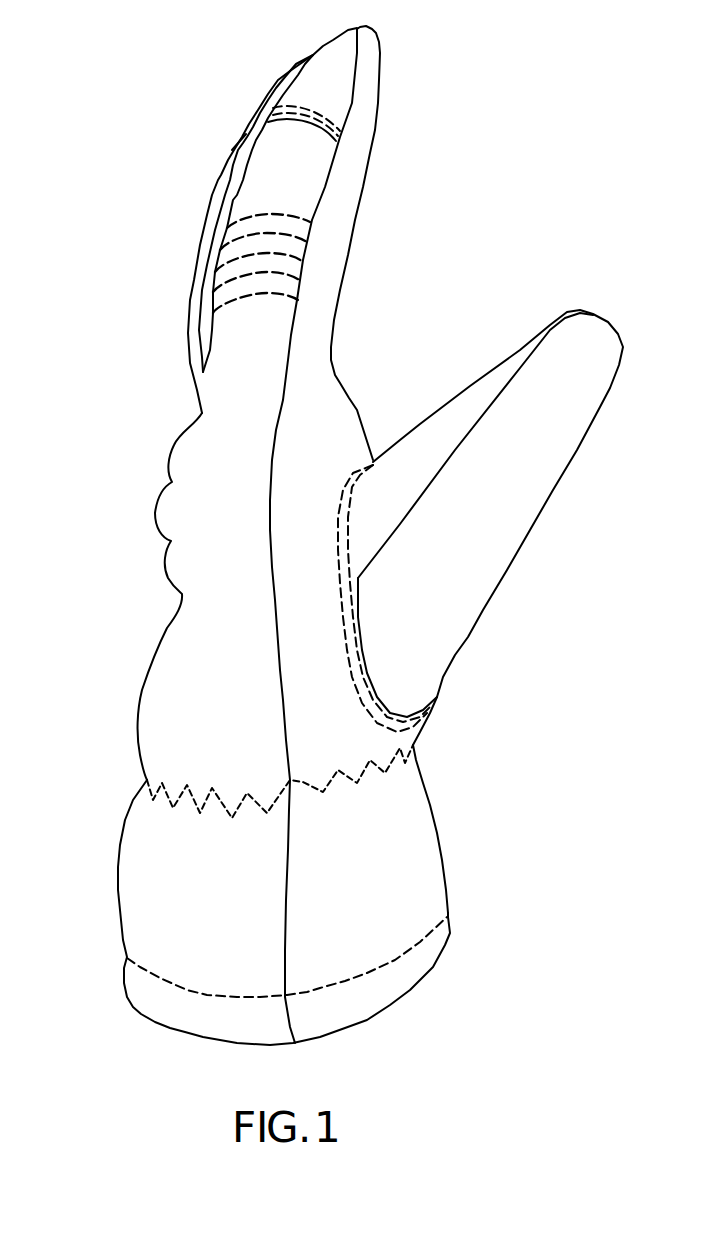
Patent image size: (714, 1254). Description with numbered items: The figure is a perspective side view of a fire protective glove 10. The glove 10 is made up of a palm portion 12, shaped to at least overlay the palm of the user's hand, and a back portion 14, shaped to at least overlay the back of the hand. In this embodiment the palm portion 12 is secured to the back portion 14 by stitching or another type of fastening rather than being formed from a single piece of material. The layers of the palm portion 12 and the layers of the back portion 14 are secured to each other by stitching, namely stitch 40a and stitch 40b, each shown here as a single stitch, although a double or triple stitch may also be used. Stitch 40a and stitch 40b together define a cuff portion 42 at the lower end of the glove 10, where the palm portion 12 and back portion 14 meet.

The fire protective glove 10 is at (333, 535).
The palm portion 12 is at (425, 805).
The back portion 14 is at (152, 675).
The stitch 40a is at (188, 782).
The stitch 40b is at (393, 968).
The cuff portion 42 is at (123, 903).